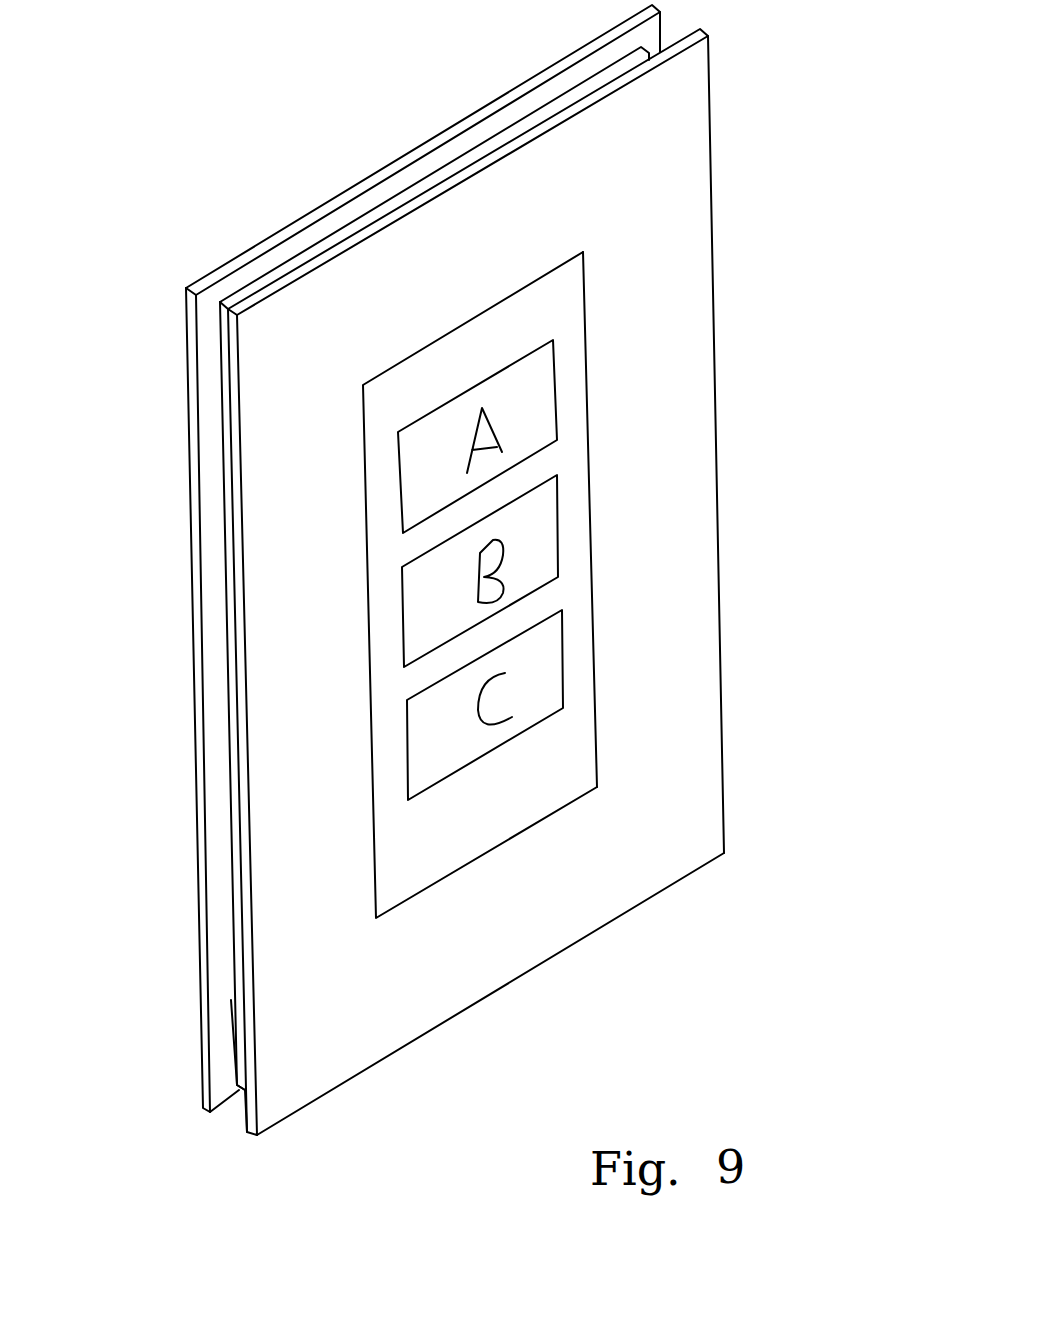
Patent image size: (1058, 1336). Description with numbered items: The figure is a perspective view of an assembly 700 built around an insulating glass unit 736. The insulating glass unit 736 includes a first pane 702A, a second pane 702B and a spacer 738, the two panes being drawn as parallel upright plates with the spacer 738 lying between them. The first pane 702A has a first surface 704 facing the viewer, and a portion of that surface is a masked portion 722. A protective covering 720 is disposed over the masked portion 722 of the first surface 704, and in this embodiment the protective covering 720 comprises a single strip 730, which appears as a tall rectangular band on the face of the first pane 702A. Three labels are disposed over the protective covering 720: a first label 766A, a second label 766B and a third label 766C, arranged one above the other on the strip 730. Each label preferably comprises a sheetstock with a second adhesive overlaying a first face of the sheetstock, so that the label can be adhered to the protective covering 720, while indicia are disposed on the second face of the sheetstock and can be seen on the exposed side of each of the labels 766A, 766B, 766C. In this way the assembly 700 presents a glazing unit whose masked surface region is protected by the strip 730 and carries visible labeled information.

The assembly 700 is at (639, 1039).
The first pane 702A is at (722, 750).
The second pane 702B is at (200, 882).
The first surface 704 is at (662, 198).
The protective covering 720 is at (590, 447).
The masked portion 722 is at (597, 594).
The single strip 730 is at (585, 333).
The insulating glass unit 736 is at (628, 914).
The spacer 738 is at (238, 1042).
The first label 766A is at (402, 480).
The second label 766B is at (407, 623).
The third label 766C is at (462, 772).